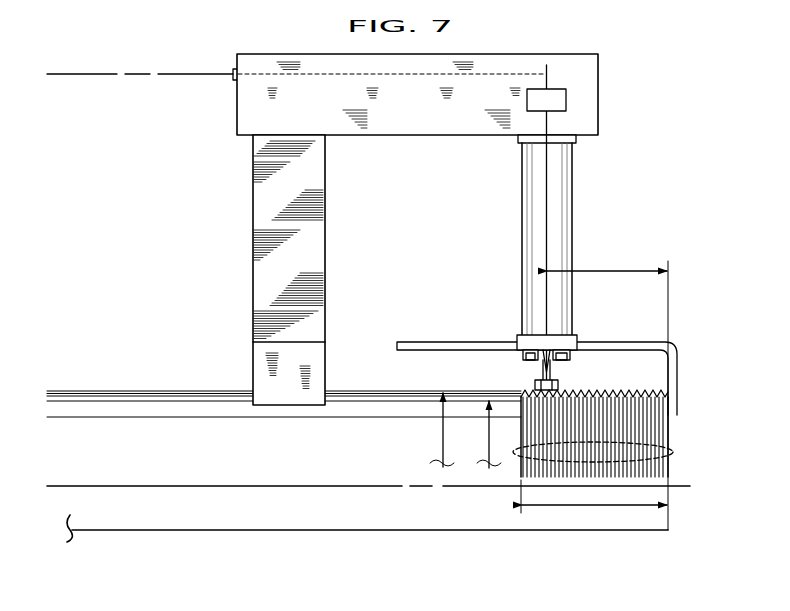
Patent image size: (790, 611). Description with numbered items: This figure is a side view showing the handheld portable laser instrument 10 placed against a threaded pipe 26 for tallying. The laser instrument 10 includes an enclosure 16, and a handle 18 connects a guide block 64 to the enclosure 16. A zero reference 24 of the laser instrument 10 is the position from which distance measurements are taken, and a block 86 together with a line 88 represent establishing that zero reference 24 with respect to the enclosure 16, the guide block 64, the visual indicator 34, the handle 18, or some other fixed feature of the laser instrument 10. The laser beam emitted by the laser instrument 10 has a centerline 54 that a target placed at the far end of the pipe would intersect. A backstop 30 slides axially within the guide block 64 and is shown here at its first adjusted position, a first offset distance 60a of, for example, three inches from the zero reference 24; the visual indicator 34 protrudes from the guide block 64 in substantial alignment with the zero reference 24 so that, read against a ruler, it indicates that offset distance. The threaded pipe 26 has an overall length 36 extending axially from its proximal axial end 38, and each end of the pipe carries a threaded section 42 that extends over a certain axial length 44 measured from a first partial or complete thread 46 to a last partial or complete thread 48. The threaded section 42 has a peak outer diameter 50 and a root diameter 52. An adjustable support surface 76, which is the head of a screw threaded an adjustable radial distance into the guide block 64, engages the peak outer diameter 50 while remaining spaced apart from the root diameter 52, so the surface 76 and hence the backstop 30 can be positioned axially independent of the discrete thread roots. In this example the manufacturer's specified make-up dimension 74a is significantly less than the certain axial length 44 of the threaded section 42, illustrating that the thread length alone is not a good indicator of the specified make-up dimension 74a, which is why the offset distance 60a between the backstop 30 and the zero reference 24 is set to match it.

The laser instrument 10 is at (664, 65).
The enclosure 16 is at (440, 137).
The handle 18 is at (522, 181).
The zero reference 24 is at (548, 201).
The threaded pipe 26 is at (158, 390).
The backstop 30 is at (666, 369).
The visual indicator 34 is at (540, 361).
The overall length 36 is at (404, 530).
The proximal axial end 38 is at (670, 428).
The threaded section 42 is at (674, 452).
The certain axial length 44 is at (592, 504).
The first partial or complete thread 46 is at (668, 393).
The last partial or complete thread 48 is at (516, 440).
The peak outer diameter 50 is at (440, 448).
The root diameter 52 is at (484, 442).
The centerline 54 is at (185, 77).
The first offset distance 60a is at (616, 270).
The guide block 64 is at (540, 334).
The specified make-up dimension 74a is at (587, 272).
The adjustable support surface 76 is at (549, 397).
The block 86 is at (566, 98).
The line 88 is at (407, 75).